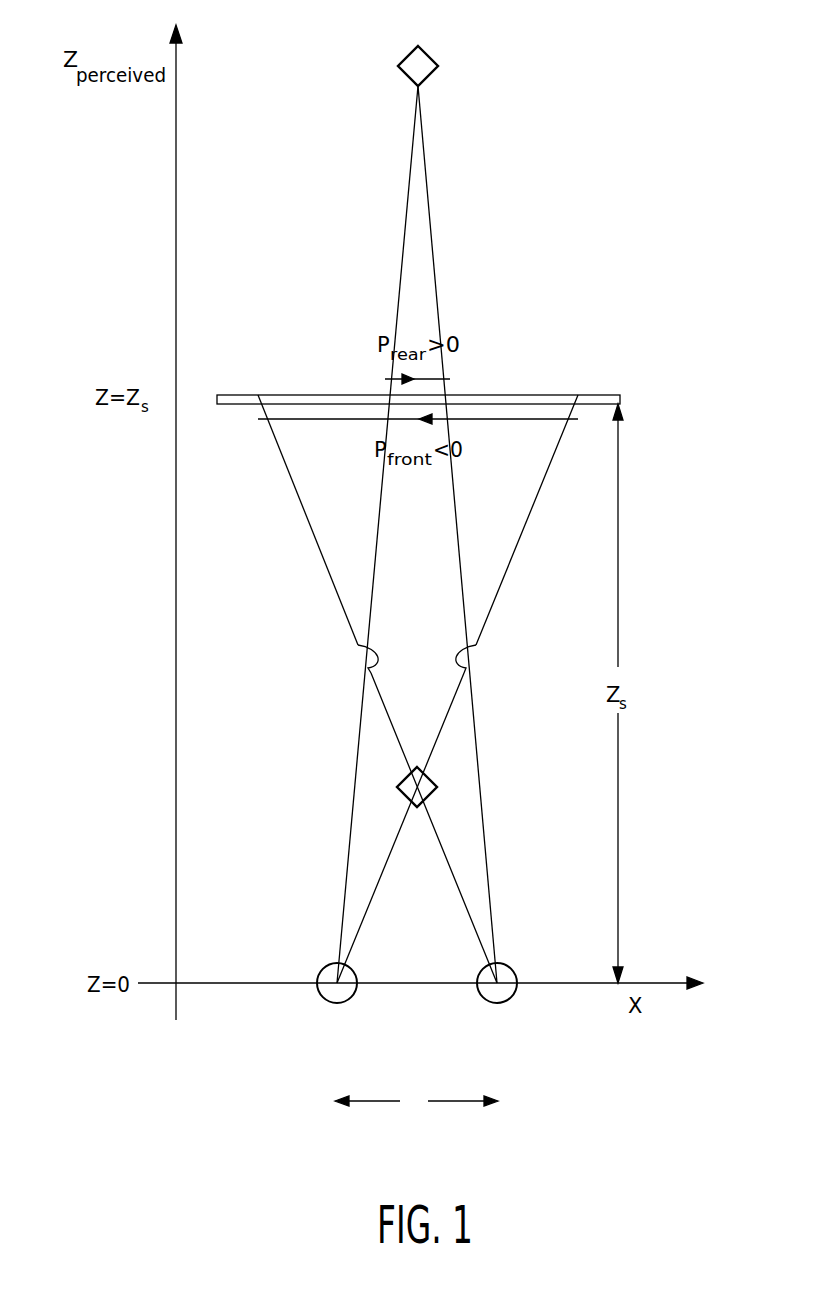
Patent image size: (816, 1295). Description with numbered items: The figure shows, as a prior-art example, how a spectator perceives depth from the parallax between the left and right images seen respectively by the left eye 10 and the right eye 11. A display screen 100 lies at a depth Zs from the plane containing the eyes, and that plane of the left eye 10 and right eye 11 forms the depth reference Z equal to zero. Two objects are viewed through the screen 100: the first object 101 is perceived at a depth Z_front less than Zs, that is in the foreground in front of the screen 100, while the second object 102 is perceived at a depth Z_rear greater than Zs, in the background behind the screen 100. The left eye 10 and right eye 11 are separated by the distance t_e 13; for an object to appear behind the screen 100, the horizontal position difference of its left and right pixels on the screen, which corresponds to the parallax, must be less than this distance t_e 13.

The left eye 10 is at (318, 993).
The right eye 11 is at (517, 993).
The distance t_e 13 is at (428, 1108).
The display screen 100 is at (605, 395).
The first object 101 is at (398, 779).
The second object 102 is at (399, 56).